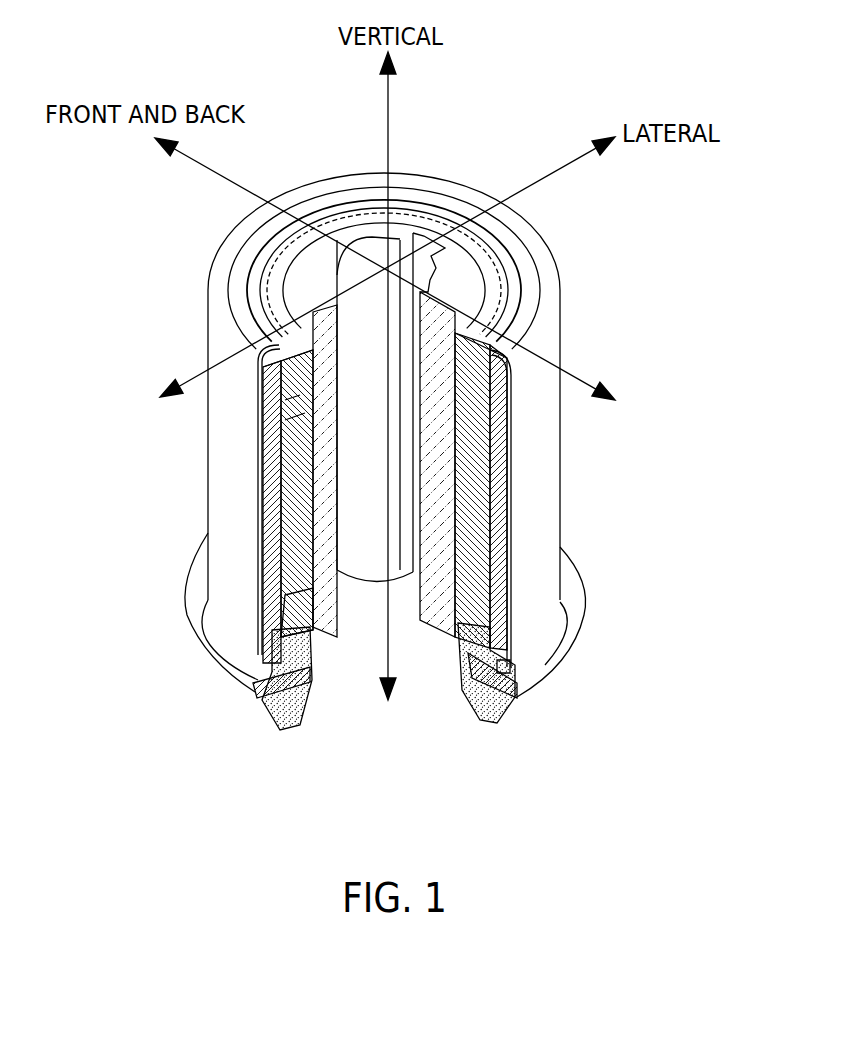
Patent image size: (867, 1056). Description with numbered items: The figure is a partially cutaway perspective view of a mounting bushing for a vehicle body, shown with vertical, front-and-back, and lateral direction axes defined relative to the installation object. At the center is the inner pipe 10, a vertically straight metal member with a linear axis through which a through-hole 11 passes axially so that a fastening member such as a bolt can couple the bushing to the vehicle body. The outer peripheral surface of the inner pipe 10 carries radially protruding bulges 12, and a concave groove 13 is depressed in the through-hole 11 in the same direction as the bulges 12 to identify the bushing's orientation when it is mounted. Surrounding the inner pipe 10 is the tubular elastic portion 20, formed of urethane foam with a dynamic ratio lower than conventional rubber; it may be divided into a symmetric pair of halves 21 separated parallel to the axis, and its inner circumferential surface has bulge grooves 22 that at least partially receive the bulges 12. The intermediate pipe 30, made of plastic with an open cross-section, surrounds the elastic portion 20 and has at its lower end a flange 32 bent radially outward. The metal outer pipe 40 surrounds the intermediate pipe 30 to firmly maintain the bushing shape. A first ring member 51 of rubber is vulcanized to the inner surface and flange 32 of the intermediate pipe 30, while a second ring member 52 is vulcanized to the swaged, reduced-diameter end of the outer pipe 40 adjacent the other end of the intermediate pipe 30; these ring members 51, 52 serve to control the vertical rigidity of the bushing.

The inner pipe 10 is at (338, 227).
The through-hole 11 is at (360, 458).
The bulge 12 is at (300, 596).
The concave groove 13 is at (427, 237).
The elastic portion 20 is at (290, 504).
The half 21 is at (303, 531).
The bulge groove 22 is at (300, 432).
The intermediate pipe 30 is at (492, 493).
The flange 32 is at (565, 570).
The outer pipe 40 is at (552, 433).
The first ring member 51 is at (487, 715).
The second ring member 52 is at (403, 177).